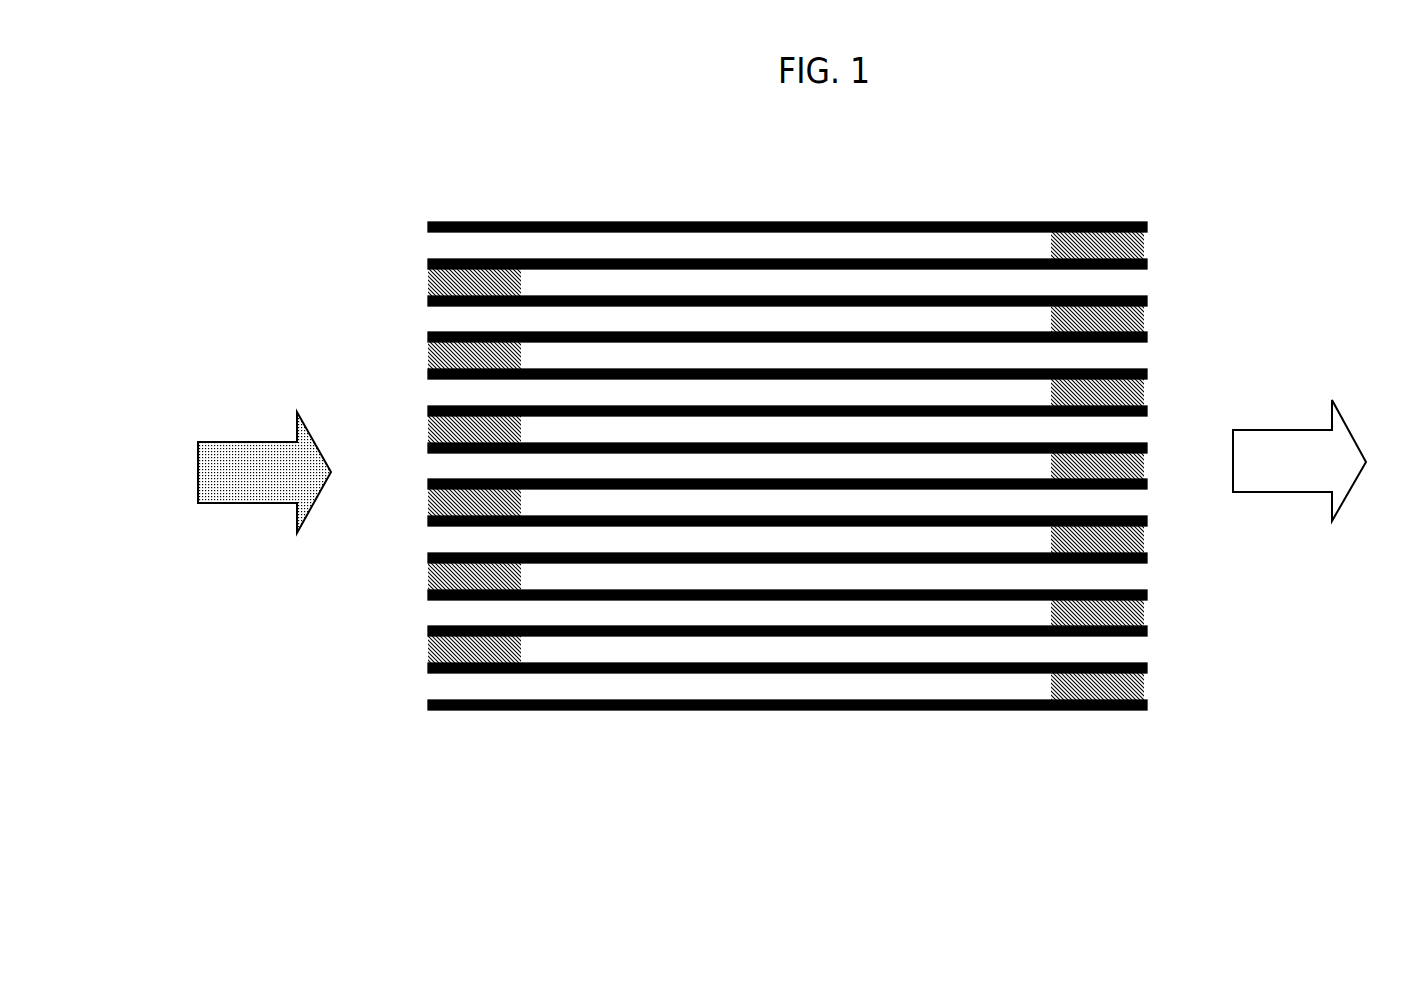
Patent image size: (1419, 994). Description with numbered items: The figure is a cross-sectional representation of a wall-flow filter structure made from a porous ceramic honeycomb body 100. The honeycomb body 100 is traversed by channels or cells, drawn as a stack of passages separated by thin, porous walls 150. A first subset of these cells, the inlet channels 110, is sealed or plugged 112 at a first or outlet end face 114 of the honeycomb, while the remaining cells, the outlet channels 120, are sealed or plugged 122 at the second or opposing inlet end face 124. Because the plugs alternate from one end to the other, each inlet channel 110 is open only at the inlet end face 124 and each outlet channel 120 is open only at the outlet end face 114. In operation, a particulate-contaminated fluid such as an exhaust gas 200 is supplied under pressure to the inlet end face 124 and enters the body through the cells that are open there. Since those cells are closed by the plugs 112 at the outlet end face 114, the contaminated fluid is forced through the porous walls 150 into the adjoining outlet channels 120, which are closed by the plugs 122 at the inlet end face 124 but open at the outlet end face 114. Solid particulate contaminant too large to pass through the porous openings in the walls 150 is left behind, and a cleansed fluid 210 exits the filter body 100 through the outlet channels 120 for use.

The porous ceramic honeycomb body 100 is at (793, 523).
The inlet channels 110 is at (939, 568).
The plug of the inlet channels 112 is at (1090, 685).
The outlet end face 114 is at (1147, 533).
The outlet channels 120 is at (587, 569).
The plug of the outlet channels 122 is at (477, 645).
The inlet end face 124 is at (428, 500).
The porous walls 150 is at (935, 262).
The exhaust gas 200 is at (233, 488).
The cleansed fluid 210 is at (1263, 478).